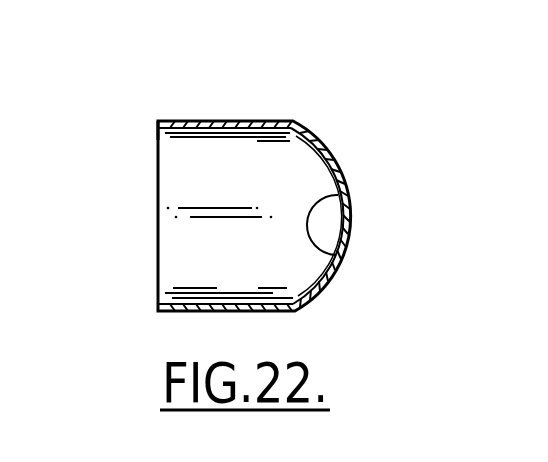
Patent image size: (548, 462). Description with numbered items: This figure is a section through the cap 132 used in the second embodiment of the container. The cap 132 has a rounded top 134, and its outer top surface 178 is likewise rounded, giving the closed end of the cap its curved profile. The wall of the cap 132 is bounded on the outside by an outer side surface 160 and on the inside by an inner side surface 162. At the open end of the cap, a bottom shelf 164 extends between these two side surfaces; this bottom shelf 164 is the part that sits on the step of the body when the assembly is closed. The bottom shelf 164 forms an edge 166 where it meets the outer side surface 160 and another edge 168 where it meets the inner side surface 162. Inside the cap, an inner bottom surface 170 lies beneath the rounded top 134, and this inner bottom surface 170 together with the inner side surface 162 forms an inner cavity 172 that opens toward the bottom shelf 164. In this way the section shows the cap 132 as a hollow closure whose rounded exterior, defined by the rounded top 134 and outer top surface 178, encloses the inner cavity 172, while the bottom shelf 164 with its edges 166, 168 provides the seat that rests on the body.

The cap 132 is at (324, 111).
The rounded top 134 is at (340, 274).
The outer side surface 160 is at (208, 120).
The inner side surface 162 is at (180, 138).
The bottom shelf 164 is at (165, 305).
The edge 166 is at (160, 313).
The edge 168 is at (158, 128).
The inner bottom surface 170 is at (334, 193).
The inner cavity 172 is at (248, 274).
The outer top surface 178 is at (332, 162).